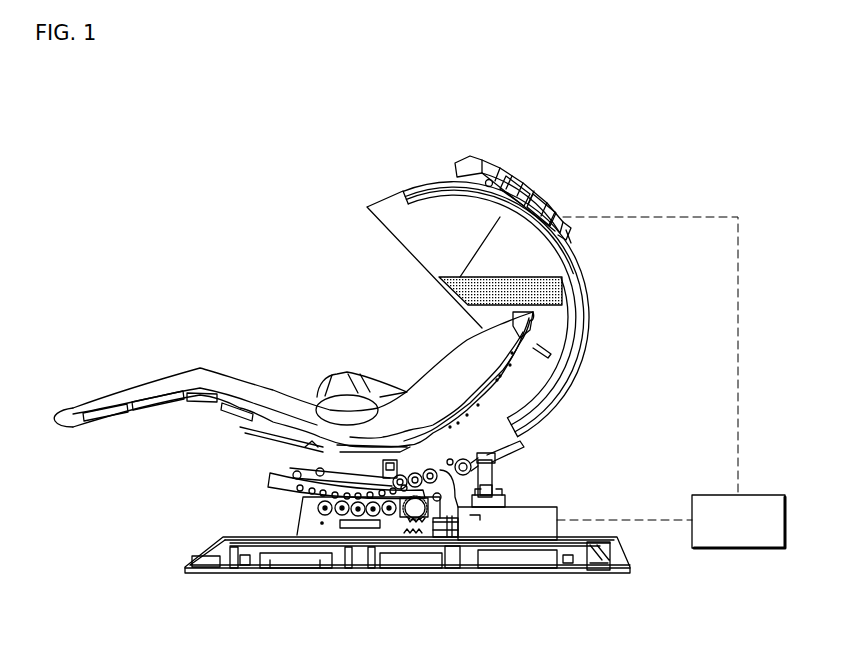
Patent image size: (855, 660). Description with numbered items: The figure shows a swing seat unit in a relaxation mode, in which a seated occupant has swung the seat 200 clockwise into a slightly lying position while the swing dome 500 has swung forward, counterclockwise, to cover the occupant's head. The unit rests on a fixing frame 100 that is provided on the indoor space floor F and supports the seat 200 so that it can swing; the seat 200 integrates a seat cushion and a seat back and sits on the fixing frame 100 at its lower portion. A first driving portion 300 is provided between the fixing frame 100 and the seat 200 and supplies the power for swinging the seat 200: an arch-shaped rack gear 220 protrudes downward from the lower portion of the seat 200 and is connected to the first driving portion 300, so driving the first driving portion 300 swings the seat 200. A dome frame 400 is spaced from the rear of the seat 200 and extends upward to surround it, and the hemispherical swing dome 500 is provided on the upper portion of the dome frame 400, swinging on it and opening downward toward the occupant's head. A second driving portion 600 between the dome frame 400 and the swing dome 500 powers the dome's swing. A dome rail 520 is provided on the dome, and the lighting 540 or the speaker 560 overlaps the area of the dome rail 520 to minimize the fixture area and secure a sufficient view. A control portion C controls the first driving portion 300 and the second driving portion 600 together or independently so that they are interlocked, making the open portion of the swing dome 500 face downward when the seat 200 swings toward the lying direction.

The fixing frame 100 is at (310, 517).
The seat 200 is at (257, 380).
The rack gear 220 is at (270, 480).
The first driving portion 300 is at (423, 523).
The dome frame 400 is at (583, 356).
The swing dome 500 is at (395, 188).
The dome rail 520 is at (449, 182).
The lighting 540 is at (463, 157).
The speaker 560 is at (474, 167).
The second driving portion 600 is at (522, 178).
The indoor space floor F is at (283, 558).
The control portion C is at (773, 493).